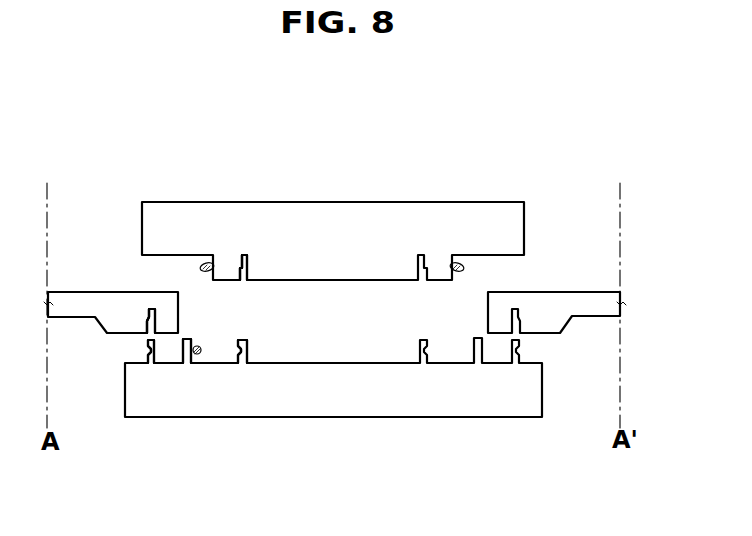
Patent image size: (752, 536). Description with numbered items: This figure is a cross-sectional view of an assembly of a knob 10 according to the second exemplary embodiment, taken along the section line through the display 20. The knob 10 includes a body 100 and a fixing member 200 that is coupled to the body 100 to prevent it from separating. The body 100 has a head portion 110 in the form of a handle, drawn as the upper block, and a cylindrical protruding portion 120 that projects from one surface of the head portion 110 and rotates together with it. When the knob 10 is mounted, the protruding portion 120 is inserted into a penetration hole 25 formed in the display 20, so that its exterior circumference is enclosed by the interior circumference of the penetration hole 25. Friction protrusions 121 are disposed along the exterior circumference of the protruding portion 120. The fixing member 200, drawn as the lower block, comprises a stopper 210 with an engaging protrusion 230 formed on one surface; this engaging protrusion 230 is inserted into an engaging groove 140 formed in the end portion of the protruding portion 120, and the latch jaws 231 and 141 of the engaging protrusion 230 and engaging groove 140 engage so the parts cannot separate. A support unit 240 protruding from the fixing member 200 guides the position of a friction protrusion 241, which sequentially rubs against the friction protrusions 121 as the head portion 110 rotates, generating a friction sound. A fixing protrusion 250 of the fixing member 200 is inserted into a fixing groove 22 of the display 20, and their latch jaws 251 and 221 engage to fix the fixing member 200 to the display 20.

The knob 10 is at (352, 297).
The body 100 is at (497, 202).
The head portion 110 is at (524, 237).
The protruding portion 120 is at (456, 283).
The friction protrusion 121 is at (206, 262).
The engaging groove 140 is at (244, 262).
The latch jaw 141 is at (230, 270).
The display 20 is at (352, 283).
The fixing groove 22 is at (146, 315).
The latch jaw 221 is at (146, 324).
The fixing member 200 is at (329, 392).
The stopper 210 is at (542, 384).
The support unit 240 is at (190, 338).
The friction protrusion 241 is at (197, 354).
The fixing protrusion 250 is at (152, 355).
The latch jaw 251 is at (148, 350).
The engaging protrusion 230 is at (247, 358).
The latch jaw 231 is at (238, 355).
The penetration hole 25 is at (464, 309).